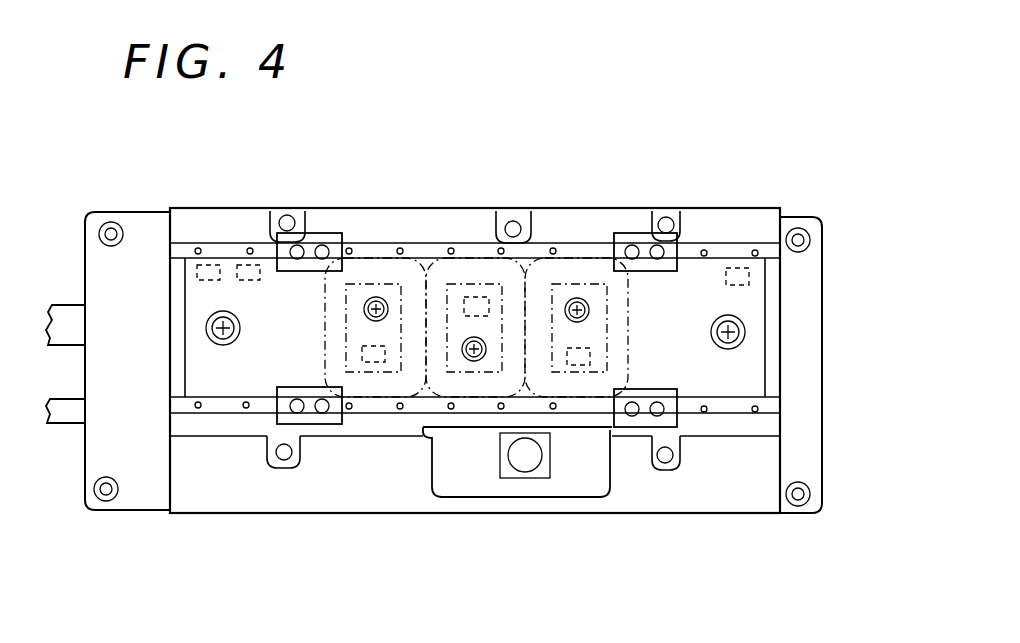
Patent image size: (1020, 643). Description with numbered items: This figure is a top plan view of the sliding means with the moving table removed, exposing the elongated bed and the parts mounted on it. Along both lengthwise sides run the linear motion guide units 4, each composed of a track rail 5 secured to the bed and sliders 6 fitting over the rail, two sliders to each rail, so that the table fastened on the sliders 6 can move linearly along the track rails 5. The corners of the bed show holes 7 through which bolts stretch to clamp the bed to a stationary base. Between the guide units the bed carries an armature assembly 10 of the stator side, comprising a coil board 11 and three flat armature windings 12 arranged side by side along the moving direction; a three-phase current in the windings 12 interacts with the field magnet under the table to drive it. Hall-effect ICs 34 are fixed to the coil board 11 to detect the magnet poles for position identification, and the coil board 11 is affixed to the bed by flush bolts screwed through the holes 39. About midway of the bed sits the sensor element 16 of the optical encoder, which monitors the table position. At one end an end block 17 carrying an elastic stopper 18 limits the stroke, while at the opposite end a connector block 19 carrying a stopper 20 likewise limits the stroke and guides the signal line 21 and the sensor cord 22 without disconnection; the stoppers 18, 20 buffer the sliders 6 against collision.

The linear motion guide unit 4 is at (475, 363).
The track rail 5 is at (593, 248).
The slider 6 is at (320, 235).
The hole 7 is at (283, 218).
The armature assembly 10 is at (562, 274).
The coil board 11 is at (715, 278).
The armature winding 12 is at (381, 282).
The sensor element 16 is at (483, 482).
The end block 17 is at (800, 300).
The stopper 18 is at (768, 375).
The connector block 19 is at (142, 477).
The stopper 20 is at (178, 287).
The signal line 21 is at (68, 330).
The sensor cord 22 is at (67, 415).
The Hall-effect IC 34 is at (480, 297).
The hole 39 is at (365, 311).